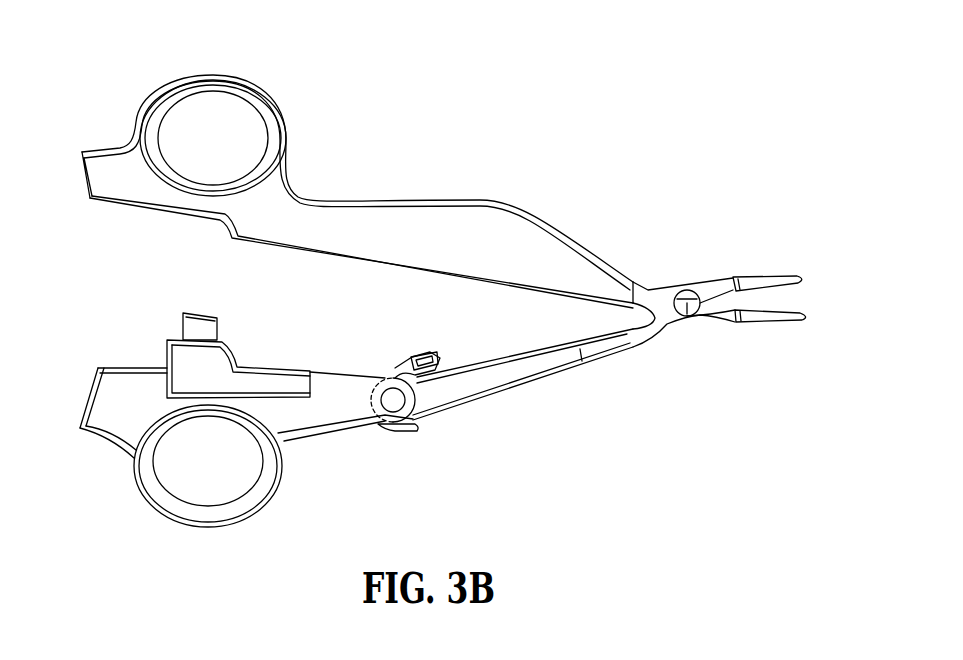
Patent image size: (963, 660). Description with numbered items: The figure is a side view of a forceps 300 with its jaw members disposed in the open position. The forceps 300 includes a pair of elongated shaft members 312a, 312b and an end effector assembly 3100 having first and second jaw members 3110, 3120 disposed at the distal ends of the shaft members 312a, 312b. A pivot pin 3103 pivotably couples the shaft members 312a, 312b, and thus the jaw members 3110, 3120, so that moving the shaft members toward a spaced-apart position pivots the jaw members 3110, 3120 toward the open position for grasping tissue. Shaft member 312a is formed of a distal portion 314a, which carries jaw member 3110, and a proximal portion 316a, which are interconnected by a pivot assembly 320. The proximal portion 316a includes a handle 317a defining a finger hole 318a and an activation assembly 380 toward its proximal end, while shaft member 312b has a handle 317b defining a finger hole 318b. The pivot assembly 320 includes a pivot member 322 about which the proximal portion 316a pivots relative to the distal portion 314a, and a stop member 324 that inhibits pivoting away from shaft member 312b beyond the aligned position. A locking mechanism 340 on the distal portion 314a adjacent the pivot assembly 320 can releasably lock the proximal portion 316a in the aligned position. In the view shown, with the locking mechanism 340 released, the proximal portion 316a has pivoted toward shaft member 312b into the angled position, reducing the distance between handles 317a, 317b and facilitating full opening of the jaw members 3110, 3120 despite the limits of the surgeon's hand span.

The forceps 300 is at (614, 174).
The shaft member 312a is at (506, 398).
The shaft member 312b is at (428, 225).
The distal portion 314a is at (580, 350).
The proximal portion 316a is at (278, 436).
The handle 317a is at (140, 462).
The handle 317b is at (275, 125).
The finger hole 318a is at (196, 490).
The finger hole 318b is at (198, 116).
The pivot assembly 320 is at (388, 444).
The pivot member 322 is at (390, 394).
The stop member 324 is at (408, 428).
The locking mechanism 340 is at (436, 348).
The activation assembly 380 is at (147, 338).
The end effector assembly 3100 is at (740, 285).
The pivot pin 3103 is at (687, 317).
The jaw member 3110 is at (776, 275).
The jaw member 3120 is at (778, 323).